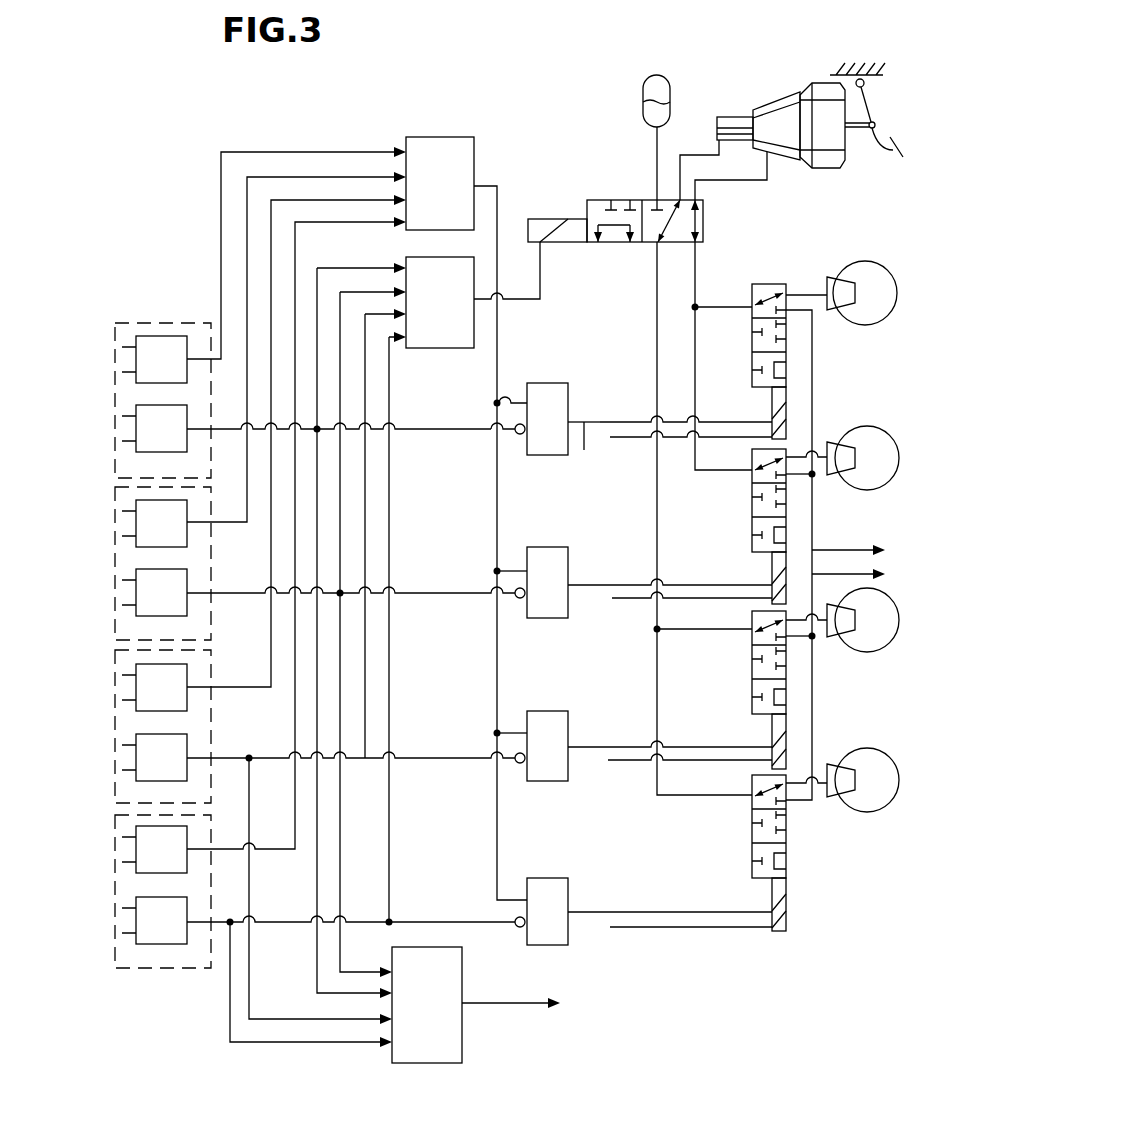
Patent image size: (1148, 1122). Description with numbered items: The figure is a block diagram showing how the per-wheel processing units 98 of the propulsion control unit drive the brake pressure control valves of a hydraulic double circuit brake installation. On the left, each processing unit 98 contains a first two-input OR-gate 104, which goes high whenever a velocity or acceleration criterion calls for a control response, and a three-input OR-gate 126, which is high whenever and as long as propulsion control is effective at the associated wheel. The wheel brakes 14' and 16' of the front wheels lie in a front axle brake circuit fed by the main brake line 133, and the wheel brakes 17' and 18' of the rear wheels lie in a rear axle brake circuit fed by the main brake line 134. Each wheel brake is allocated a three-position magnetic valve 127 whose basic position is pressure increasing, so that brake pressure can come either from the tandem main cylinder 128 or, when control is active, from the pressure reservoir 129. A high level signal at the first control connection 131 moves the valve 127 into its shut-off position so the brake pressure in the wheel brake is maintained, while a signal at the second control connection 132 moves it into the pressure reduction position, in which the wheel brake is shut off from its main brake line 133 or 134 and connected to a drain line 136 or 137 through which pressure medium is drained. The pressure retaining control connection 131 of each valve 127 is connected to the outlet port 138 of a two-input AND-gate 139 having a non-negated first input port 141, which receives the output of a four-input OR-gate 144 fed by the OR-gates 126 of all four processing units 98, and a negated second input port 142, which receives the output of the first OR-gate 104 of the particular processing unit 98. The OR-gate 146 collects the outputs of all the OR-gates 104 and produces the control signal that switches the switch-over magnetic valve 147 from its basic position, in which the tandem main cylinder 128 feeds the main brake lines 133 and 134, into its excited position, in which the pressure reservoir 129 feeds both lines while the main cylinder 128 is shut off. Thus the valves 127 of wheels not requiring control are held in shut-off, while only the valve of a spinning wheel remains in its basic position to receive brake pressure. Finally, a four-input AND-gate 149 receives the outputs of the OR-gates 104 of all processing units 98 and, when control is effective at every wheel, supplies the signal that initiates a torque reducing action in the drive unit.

The processing unit 98 is at (206, 401).
The first two-input OR-gate 104 is at (162, 438).
The three-input OR-gate 126 is at (162, 343).
The three-position magnetic valve 127 is at (752, 347).
The tandem main cylinder 128 is at (775, 106).
The pressure reservoir 129 is at (643, 93).
The first control connection 131 is at (743, 418).
The second control connection 132 is at (742, 438).
The main brake line 133 is at (695, 277).
The main brake line 134 is at (658, 538).
The drain line 136 is at (812, 510).
The drain line 137 is at (837, 570).
The outlet port 138 is at (589, 450).
The two-input AND-gate 139 is at (563, 395).
The first input port 141 is at (495, 401).
The second input port 142 is at (507, 437).
The four-input OR-gate 144 is at (430, 147).
The OR-gate 146 is at (433, 338).
The switch-over magnetic valve 147 is at (608, 243).
The four-input AND-gate 149 is at (462, 978).
The wheel brake 14' is at (862, 280).
The wheel brake 16' is at (863, 438).
The wheel brake 17' is at (863, 638).
The wheel brake 18' is at (863, 797).